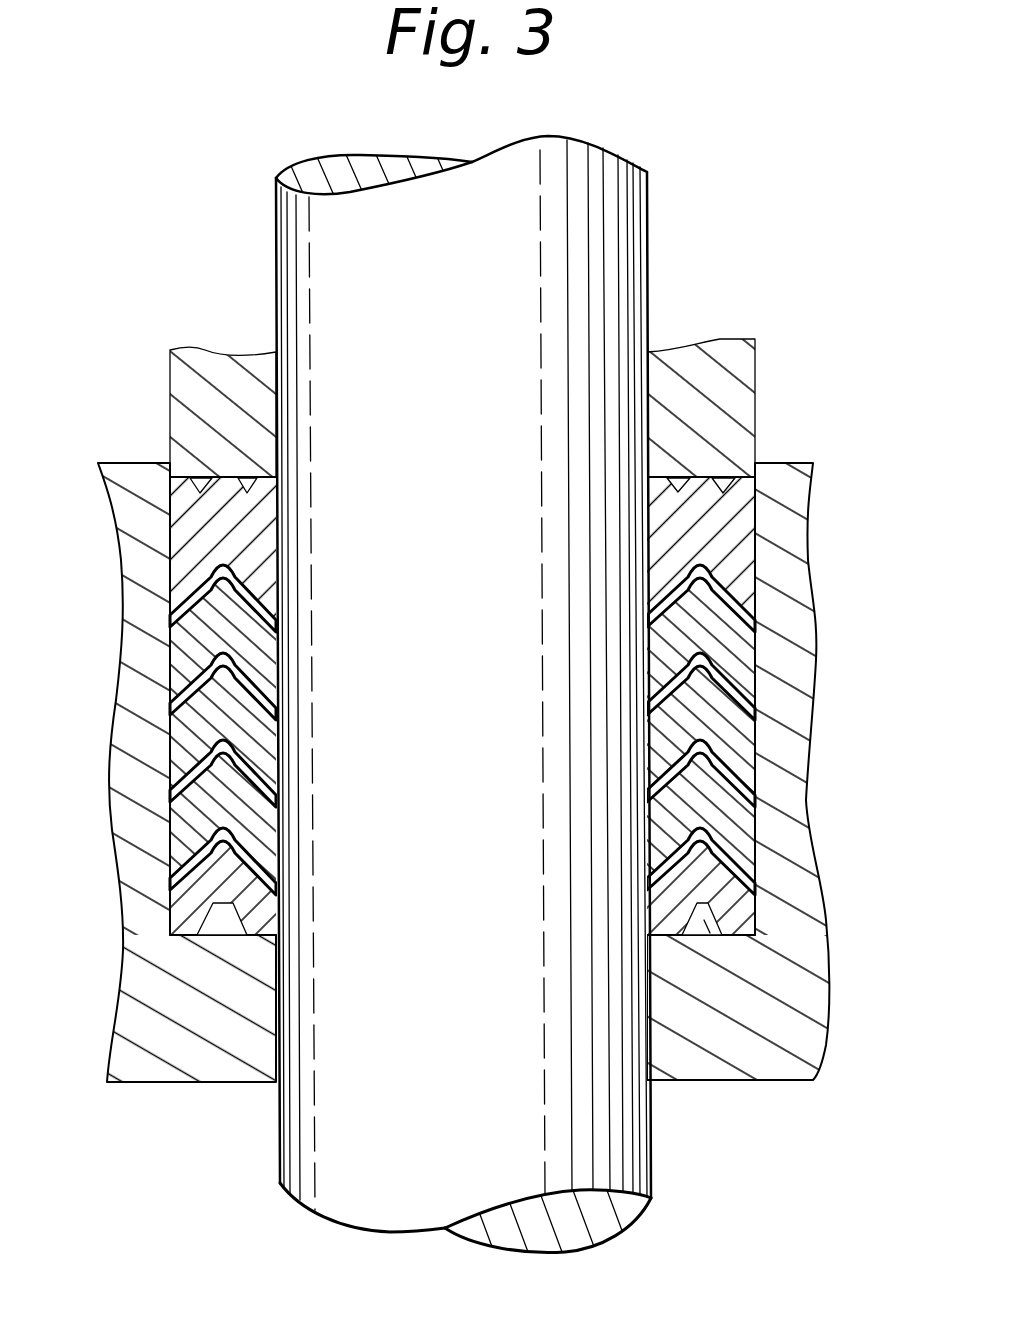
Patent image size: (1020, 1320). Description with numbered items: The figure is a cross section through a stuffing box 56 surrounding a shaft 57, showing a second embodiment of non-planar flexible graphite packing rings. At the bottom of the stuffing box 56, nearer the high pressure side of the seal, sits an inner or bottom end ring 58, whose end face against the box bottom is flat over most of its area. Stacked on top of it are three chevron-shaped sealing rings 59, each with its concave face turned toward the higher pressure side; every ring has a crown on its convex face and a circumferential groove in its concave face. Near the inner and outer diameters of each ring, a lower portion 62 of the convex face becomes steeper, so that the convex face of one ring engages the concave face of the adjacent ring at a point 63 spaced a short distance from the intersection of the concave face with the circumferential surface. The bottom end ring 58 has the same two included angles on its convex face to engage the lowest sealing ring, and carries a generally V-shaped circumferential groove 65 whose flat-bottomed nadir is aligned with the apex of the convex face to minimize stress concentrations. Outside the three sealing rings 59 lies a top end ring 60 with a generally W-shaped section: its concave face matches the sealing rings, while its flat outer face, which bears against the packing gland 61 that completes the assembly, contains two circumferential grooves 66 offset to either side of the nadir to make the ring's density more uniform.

The stuffing box 56 is at (143, 1055).
The shaft 57 is at (606, 1154).
The bottom end ring 58 is at (175, 890).
The chevron-shaped sealing rings 59 is at (176, 811).
The top end ring 60 is at (758, 510).
The packing gland 61 is at (755, 377).
The lower portion of the convex face 62 is at (178, 880).
The engagement point 63 is at (200, 800).
The V-shaped circumferential groove 65 is at (705, 920).
The circumferential grooves 66 is at (680, 478).